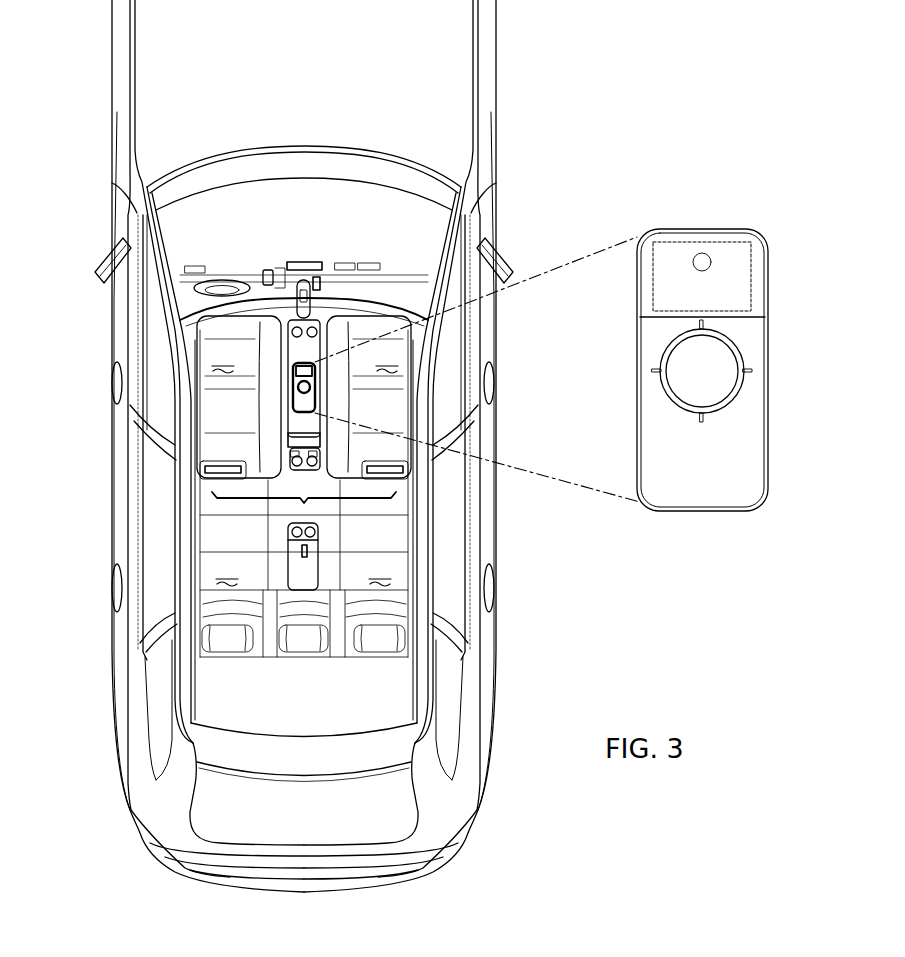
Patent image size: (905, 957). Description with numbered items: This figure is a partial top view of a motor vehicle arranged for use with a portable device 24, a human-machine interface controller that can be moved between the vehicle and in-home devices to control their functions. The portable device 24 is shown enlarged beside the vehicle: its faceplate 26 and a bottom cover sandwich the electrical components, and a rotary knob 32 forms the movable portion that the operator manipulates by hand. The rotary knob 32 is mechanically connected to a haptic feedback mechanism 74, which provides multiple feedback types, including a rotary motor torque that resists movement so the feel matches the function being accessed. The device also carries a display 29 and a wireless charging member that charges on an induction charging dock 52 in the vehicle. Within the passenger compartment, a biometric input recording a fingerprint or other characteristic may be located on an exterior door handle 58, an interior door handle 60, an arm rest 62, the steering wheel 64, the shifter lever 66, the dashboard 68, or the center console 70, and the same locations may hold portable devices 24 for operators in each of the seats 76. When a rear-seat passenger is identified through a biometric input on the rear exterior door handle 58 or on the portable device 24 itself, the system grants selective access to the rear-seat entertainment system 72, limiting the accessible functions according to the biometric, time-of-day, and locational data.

The portable device 24 is at (322, 396).
The faceplate 26 is at (729, 240).
The display 29 is at (308, 262).
The rotary knob 32 is at (680, 386).
The induction charging dock 52 is at (322, 285).
The exterior door handle 58 is at (113, 393).
The interior door handle 60 is at (150, 338).
The arm rest 62 is at (293, 349).
The steering wheel 64 is at (192, 292).
The shifter lever 66 is at (312, 297).
The dashboard 68 is at (250, 278).
The center console 70 is at (290, 285).
The rear-seat entertainment system 72 is at (303, 500).
The haptic feedback mechanism 74 is at (720, 391).
The seats 76 is at (305, 466).